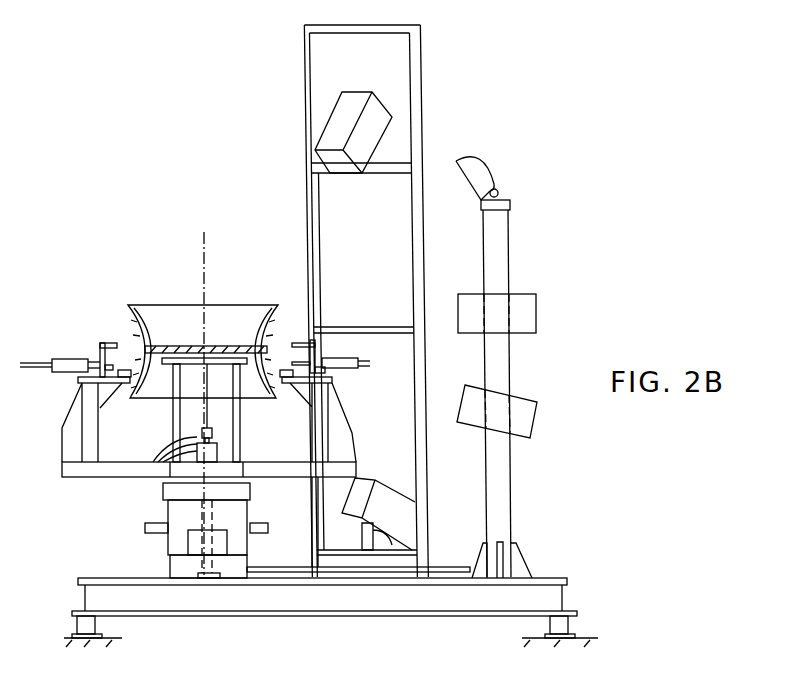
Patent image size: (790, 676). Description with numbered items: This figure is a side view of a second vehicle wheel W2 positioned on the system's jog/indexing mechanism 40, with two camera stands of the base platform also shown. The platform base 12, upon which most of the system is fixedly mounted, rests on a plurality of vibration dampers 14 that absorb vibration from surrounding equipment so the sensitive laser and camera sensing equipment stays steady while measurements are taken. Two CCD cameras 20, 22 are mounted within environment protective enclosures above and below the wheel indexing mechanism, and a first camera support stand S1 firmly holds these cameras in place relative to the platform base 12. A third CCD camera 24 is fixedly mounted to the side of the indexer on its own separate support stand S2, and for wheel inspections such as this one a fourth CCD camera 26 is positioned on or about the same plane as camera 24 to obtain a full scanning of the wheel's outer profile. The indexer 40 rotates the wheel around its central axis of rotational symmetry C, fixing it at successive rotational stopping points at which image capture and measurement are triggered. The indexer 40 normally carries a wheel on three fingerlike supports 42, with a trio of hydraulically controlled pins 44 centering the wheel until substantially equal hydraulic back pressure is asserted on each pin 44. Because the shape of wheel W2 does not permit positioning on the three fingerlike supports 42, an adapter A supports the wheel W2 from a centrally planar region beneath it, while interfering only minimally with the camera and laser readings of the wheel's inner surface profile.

The platform base 12 is at (105, 578).
The vibration dampers 14 is at (77, 626).
The CCD camera 20 is at (324, 118).
The CCD camera 22 is at (370, 478).
The third CCD camera 24 is at (536, 302).
The fourth CCD camera 26 is at (530, 438).
The jog/indexing mechanism 40 is at (62, 440).
The fingerlike supports 42 is at (131, 360).
The hydraulically controlled pins 44 is at (100, 348).
The adapter A is at (240, 415).
The central axis of rotational symmetry C is at (204, 391).
The first camera support stand S1 is at (421, 108).
The separate support stand S2 is at (509, 218).
The second vehicle wheel W2 is at (172, 305).